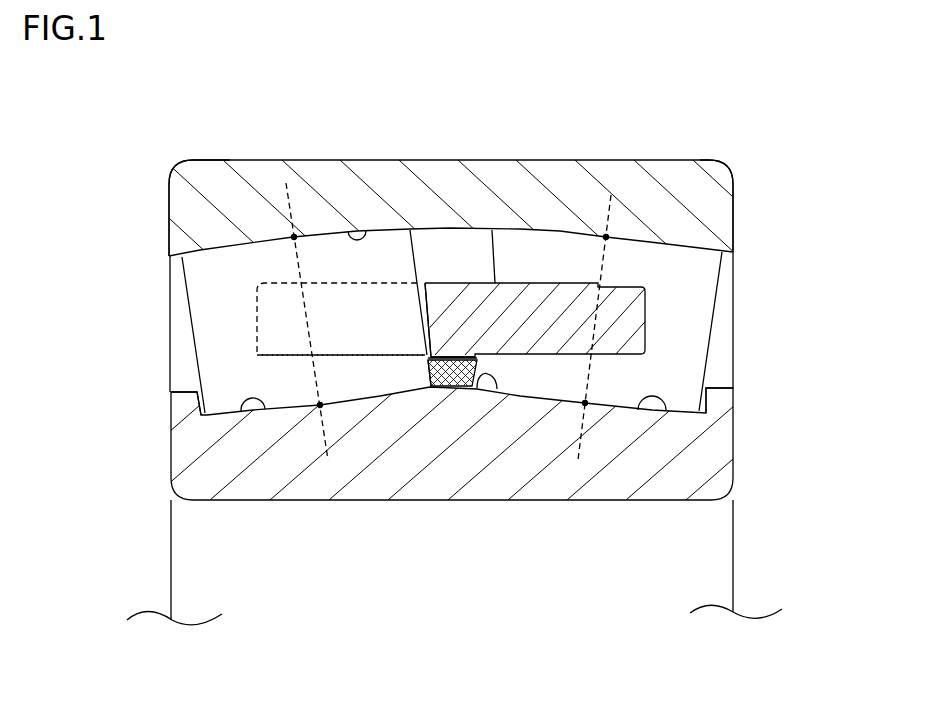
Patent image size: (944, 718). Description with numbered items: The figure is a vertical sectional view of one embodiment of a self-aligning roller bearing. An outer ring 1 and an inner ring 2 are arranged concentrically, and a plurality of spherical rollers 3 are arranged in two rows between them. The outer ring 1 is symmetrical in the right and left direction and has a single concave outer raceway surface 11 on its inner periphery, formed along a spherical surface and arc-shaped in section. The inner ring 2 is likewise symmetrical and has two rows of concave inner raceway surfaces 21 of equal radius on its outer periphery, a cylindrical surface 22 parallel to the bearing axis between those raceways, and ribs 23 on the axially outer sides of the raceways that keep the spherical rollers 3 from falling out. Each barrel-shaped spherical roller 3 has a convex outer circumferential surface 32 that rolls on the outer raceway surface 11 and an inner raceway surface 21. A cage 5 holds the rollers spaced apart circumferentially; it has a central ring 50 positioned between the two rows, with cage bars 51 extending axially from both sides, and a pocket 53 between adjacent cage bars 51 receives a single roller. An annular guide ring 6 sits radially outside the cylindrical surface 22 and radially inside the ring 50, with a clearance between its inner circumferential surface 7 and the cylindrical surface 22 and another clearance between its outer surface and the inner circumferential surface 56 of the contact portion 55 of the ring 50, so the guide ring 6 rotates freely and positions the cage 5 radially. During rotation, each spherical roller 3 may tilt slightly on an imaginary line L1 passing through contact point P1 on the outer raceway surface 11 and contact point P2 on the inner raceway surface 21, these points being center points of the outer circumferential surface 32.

The outer ring 1 is at (167, 215).
The inner ring 2 is at (203, 442).
The spherical roller 3 is at (213, 323).
The cage 5 is at (463, 275).
The guide ring 6 is at (446, 390).
The inner circumferential surface 7 is at (458, 388).
The outer raceway surface 11 is at (357, 229).
The inner raceway surface 21 is at (240, 411).
The cylindrical surface 22 is at (483, 383).
The rib 23 is at (180, 402).
The outer circumferential surface 32 is at (222, 245).
The ring 50 is at (434, 302).
The cage bar 51 is at (287, 311).
The pocket 53 is at (282, 357).
The contact portion 55 is at (457, 357).
The inner circumferential surface 56 is at (432, 386).
The imaginary line L1 is at (290, 212).
The contact point P1 is at (295, 237).
The contact point P2 is at (307, 413).